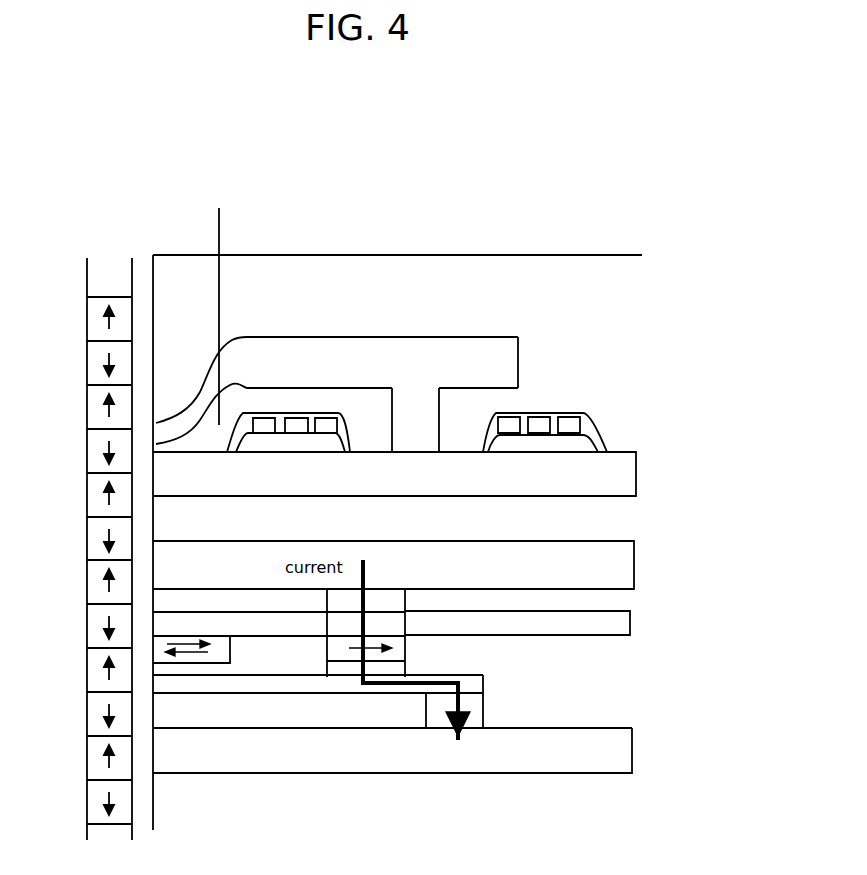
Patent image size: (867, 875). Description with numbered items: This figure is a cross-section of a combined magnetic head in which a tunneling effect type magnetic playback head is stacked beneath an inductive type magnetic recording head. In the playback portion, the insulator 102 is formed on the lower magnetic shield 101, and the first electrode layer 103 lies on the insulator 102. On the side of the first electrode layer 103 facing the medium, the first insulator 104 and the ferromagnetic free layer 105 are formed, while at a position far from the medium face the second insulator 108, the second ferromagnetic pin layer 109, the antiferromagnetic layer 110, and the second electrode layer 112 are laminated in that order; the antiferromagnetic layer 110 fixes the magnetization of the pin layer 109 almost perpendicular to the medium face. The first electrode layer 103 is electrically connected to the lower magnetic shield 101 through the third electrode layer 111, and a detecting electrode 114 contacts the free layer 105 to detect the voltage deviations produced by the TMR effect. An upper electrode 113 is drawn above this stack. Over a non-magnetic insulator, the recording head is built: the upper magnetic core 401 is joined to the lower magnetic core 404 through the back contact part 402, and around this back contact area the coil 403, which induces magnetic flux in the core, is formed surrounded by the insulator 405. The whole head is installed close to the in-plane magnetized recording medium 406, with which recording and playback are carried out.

The lower magnetic shield 101 is at (585, 757).
The insulator 102 is at (340, 717).
The first electrode layer 103 is at (175, 687).
The first insulator 104 is at (189, 672).
The ferromagnetic layer (free layer) 105 is at (215, 650).
The second insulator 108 is at (392, 670).
The second ferromagnetic layer (pin layer) 109 is at (405, 647).
The antiferromagnetic layer 110 is at (383, 628).
The third electrode layer 111 is at (485, 711).
The second electrode layer 112 is at (383, 607).
The upper electrode 113 is at (583, 560).
The detecting electrode 114 is at (615, 623).
The upper magnetic core 401 is at (262, 363).
The back contact part 402 is at (405, 398).
The coil 403 is at (538, 417).
The lower magnetic core 404 is at (605, 475).
The insulator 405 is at (220, 306).
The in-plane magnetic recording medium 406 is at (97, 410).